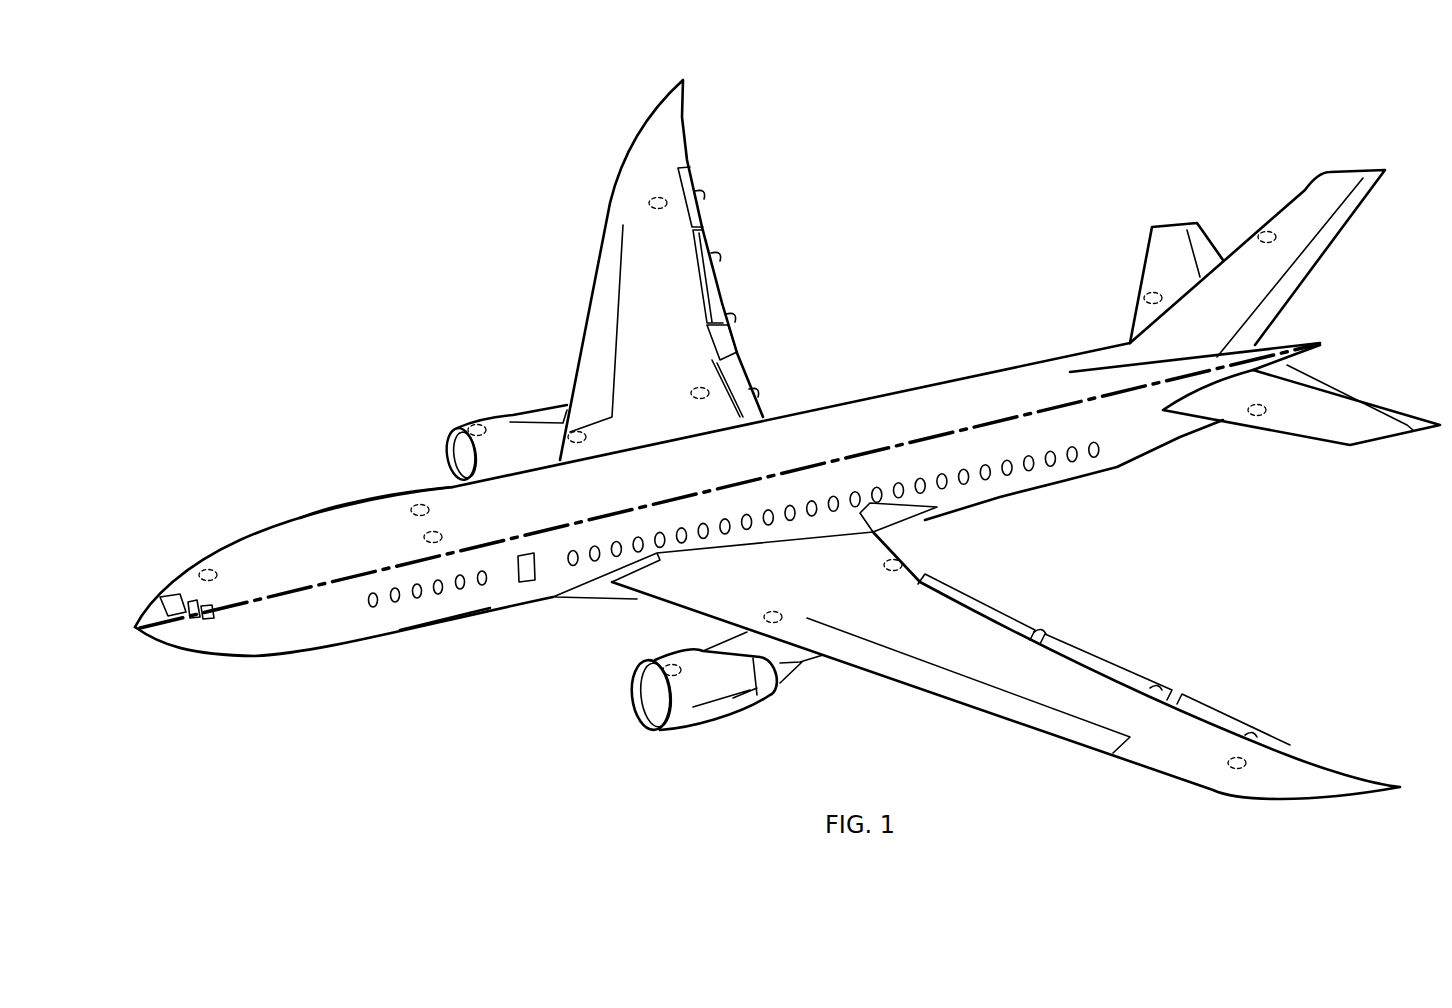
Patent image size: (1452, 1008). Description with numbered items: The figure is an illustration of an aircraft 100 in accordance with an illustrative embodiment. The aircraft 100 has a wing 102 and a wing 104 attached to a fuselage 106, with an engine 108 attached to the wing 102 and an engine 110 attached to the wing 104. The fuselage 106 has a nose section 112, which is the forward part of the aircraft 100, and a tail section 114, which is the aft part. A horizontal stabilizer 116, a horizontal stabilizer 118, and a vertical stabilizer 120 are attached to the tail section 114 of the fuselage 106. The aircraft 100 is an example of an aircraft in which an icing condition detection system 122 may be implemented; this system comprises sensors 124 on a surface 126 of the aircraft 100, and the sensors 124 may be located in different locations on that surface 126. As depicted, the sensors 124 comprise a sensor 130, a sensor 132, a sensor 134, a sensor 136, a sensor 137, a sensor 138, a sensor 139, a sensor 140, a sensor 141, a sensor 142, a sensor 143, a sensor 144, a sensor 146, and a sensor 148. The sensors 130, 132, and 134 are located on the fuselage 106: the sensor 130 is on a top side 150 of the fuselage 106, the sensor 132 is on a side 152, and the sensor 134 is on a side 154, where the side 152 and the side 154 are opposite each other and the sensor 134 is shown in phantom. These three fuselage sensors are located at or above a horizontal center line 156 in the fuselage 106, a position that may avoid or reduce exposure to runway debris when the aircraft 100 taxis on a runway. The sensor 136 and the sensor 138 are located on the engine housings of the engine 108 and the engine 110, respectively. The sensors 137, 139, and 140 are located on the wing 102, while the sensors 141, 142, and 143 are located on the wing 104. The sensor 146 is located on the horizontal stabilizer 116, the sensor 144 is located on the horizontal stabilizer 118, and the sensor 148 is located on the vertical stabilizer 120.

The aircraft 100 is at (392, 337).
The wing 102 is at (688, 116).
The wing 104 is at (1163, 775).
The fuselage 106 is at (293, 515).
The engine 108 is at (490, 413).
The engine 110 is at (717, 723).
The nose section 112 is at (175, 692).
The tail section 114 is at (1263, 484).
The horizontal stabilizer 116 is at (1147, 247).
The horizontal stabilizer 118 is at (1323, 440).
The vertical stabilizer 120 is at (1302, 300).
The icing condition detection system 122 is at (779, 320).
The sensors 124 is at (929, 621).
The surface 126 is at (834, 579).
The sensor 130 is at (218, 577).
The sensor 132 is at (440, 530).
The sensor 134 is at (413, 518).
The sensor 136 is at (457, 423).
The sensor 137 is at (650, 203).
The sensor 138 is at (660, 660).
The sensor 139 is at (693, 390).
The sensor 140 is at (590, 433).
The sensor 141 is at (907, 558).
The sensor 142 is at (767, 610).
The sensor 143 is at (1250, 765).
The sensor 144 is at (1240, 413).
The sensor 146 is at (1143, 303).
The sensor 148 is at (1270, 227).
The top side 150 is at (337, 513).
The side 152 is at (433, 617).
The side 154 is at (397, 490).
The horizontal center line 156 is at (803, 467).